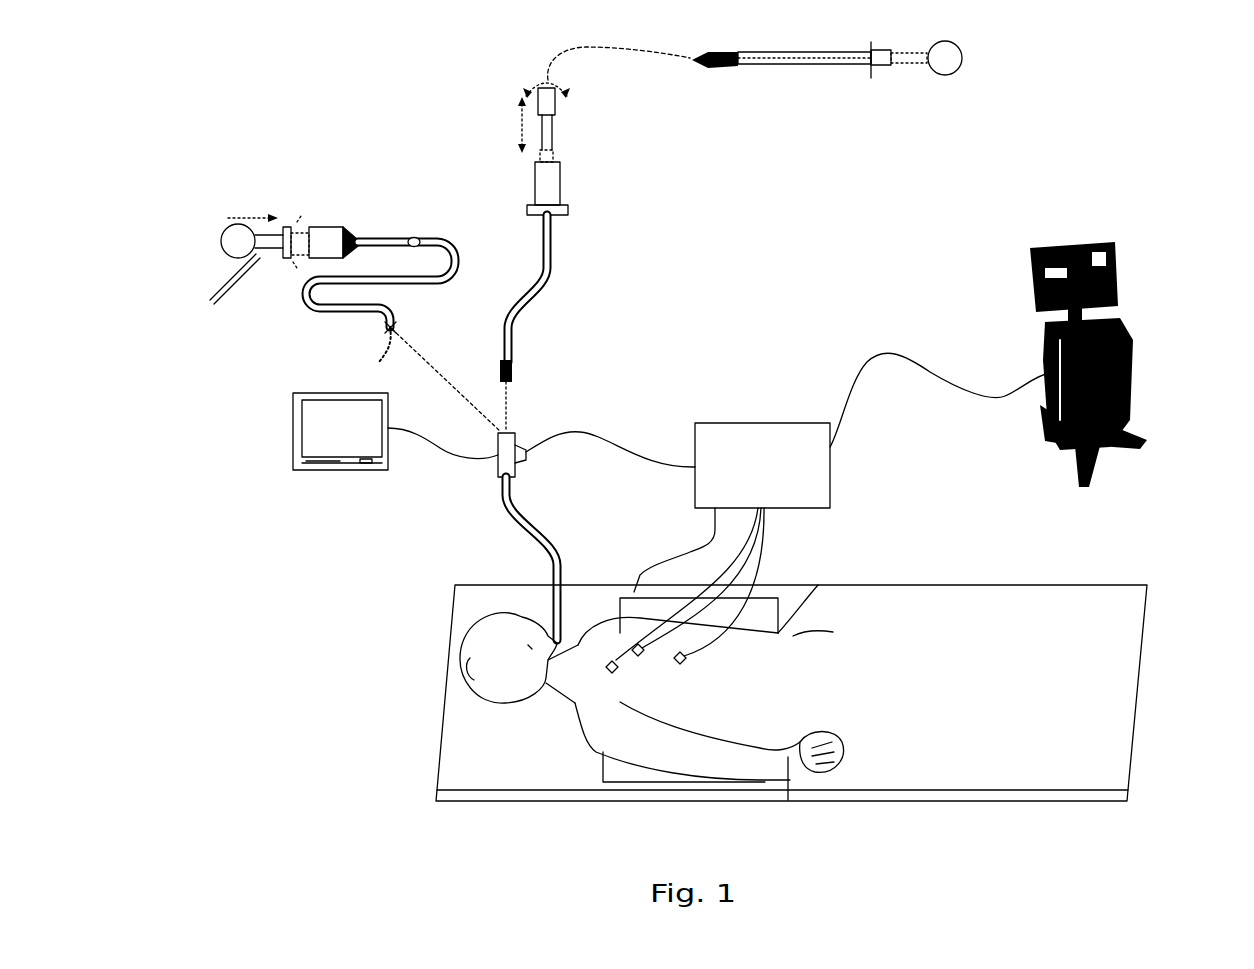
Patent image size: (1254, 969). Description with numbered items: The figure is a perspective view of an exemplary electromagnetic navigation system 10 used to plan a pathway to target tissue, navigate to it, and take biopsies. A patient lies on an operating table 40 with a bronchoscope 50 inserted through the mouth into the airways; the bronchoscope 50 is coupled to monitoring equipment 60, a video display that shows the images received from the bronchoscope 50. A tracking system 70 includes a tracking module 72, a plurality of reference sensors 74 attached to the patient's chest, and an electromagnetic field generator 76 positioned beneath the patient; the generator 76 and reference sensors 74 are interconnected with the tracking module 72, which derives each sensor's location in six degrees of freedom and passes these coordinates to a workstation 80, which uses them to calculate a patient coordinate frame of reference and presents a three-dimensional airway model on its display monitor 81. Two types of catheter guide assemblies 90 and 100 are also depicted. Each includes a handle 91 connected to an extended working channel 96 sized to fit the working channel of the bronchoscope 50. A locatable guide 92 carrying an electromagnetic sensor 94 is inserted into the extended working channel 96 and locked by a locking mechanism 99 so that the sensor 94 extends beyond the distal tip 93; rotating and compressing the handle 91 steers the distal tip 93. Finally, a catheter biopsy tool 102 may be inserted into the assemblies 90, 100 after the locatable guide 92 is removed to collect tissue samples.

The electromagnetic navigation system 10 is at (1172, 106).
The operating table 40 is at (462, 737).
The bronchoscope 50 is at (513, 517).
The monitoring equipment 60 is at (312, 474).
The tracking system 70 is at (826, 326).
The tracking module 72 is at (769, 472).
The reference sensors 74 is at (614, 672).
The electromagnetic field generator 76 is at (617, 782).
The workstation 80 is at (1130, 377).
The display monitor 81 is at (1118, 280).
The catheter guide assembly 90 is at (221, 175).
The handle 91 is at (358, 208).
The locatable guide 92 is at (384, 238).
The distal tip 93 is at (498, 366).
The electromagnetic sensor 94 is at (392, 326).
The extended working channel 96 is at (461, 258).
The locking mechanism 99 is at (420, 238).
The catheter guide assembly 100 is at (580, 255).
The catheter biopsy tool 102 is at (992, 57).